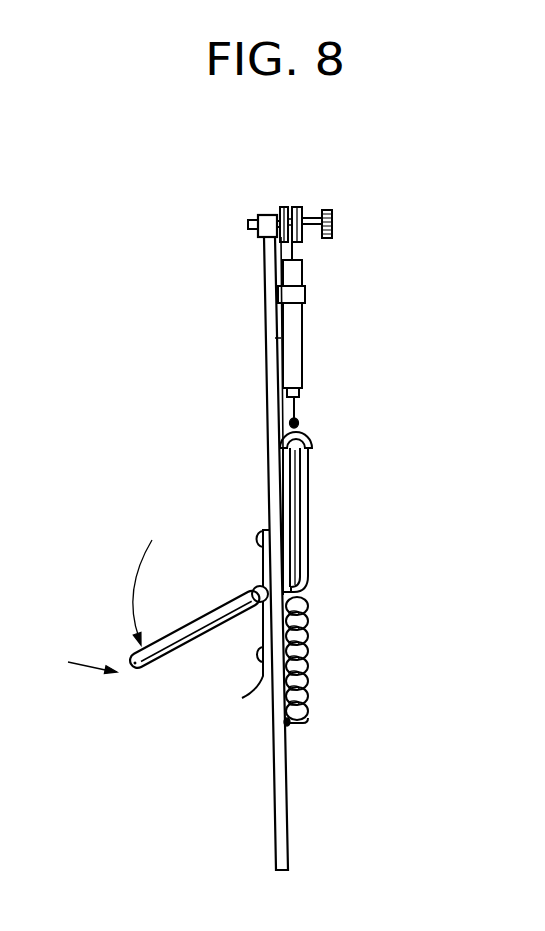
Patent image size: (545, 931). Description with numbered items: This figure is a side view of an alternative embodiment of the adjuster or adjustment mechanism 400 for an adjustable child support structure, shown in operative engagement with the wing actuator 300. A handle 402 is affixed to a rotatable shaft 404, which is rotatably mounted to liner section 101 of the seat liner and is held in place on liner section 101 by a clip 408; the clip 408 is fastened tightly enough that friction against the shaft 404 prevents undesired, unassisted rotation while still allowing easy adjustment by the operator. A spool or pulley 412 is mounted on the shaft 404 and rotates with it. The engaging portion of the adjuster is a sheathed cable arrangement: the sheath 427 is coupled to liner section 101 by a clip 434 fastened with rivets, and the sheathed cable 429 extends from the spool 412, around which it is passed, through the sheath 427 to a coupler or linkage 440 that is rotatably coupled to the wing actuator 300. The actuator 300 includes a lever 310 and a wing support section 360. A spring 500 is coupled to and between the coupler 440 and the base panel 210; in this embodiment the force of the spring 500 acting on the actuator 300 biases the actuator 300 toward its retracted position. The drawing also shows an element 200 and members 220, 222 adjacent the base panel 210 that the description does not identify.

The liner section 101 is at (262, 263).
The lever assembly 200 is at (262, 460).
The base panel 210 is at (276, 803).
The bracket 220 is at (262, 674).
The pins 222 is at (258, 540).
The wing actuator 300 is at (318, 541).
The lever 310 is at (298, 448).
The wing support section 360 is at (153, 660).
The adjuster 400 is at (410, 303).
The handle 402 is at (335, 220).
The rotatable shaft 404 is at (250, 221).
The clip 408 is at (266, 212).
The spool 412 is at (303, 210).
The sheath 427 is at (314, 351).
The sheathed cable 429 is at (301, 404).
The clip 434 is at (306, 291).
The coupler 440 is at (306, 432).
The spring 500 is at (318, 697).